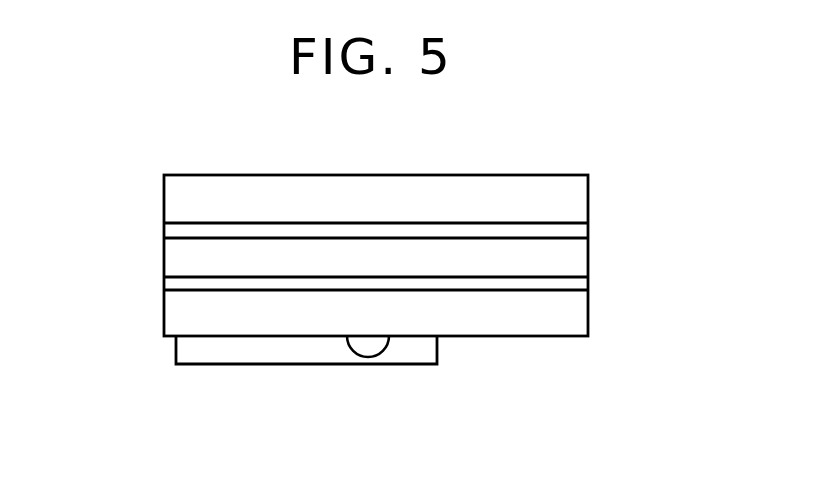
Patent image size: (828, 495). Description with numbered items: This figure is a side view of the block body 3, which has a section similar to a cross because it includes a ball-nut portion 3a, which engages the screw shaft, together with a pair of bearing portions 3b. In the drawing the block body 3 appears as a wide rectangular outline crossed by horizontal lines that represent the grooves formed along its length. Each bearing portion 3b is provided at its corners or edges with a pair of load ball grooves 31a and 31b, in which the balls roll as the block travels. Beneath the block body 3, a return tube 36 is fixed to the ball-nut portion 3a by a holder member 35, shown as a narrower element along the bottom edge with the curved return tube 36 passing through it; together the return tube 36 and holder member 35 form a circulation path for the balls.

The block body 3 is at (223, 174).
The ball-nut portion 3a is at (533, 187).
The bearing portion 3b is at (575, 261).
The load ball groove 31a is at (174, 233).
The load ball groove 31b is at (174, 285).
The holder member 35 is at (275, 356).
The return tube 36 is at (372, 348).